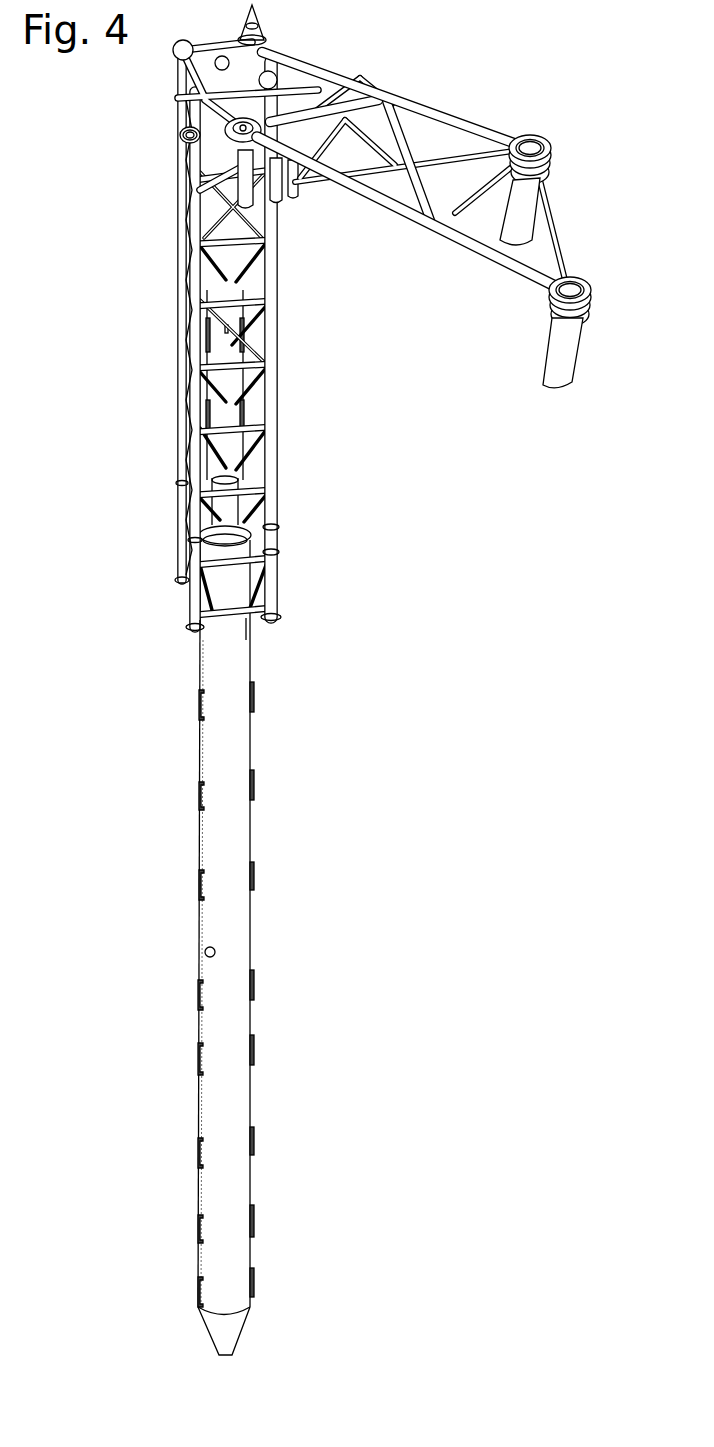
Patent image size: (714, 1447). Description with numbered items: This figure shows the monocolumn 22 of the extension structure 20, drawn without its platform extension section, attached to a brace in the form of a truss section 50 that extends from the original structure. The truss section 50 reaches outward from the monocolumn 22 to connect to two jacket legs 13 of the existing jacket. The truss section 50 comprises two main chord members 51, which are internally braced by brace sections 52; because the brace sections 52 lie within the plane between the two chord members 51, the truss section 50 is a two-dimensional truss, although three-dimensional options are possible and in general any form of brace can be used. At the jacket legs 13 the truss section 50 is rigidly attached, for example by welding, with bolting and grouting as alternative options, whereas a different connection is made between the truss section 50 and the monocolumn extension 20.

The jacket leg 13 is at (530, 200).
The extension structure 20 is at (182, 240).
The mono column 22 is at (245, 658).
The truss section 50 is at (450, 207).
The chord member 51 is at (378, 90).
The brace section 52 is at (423, 203).